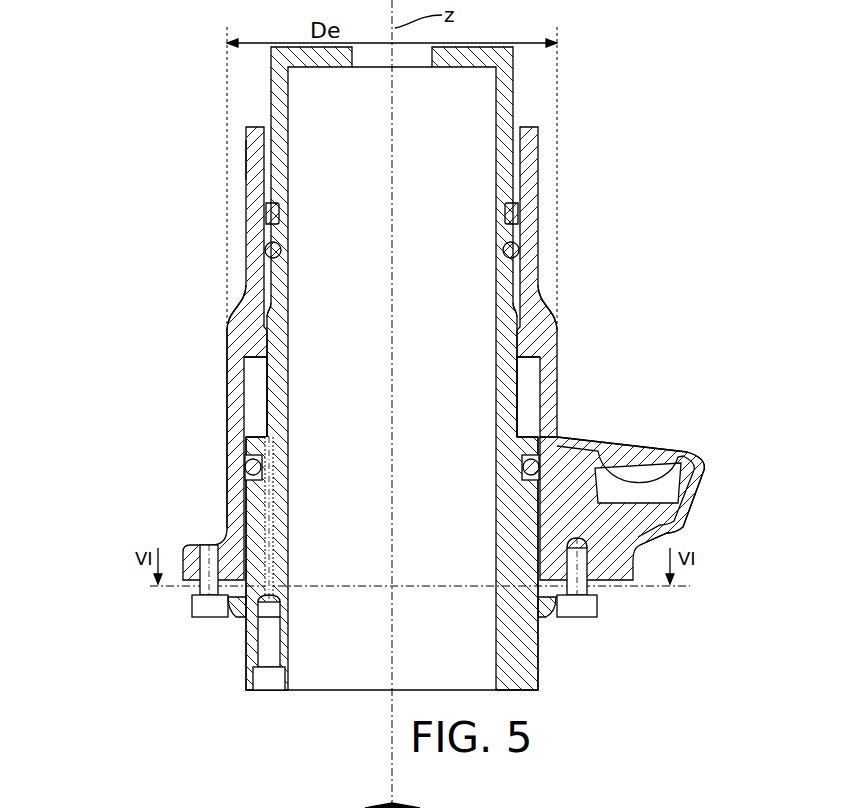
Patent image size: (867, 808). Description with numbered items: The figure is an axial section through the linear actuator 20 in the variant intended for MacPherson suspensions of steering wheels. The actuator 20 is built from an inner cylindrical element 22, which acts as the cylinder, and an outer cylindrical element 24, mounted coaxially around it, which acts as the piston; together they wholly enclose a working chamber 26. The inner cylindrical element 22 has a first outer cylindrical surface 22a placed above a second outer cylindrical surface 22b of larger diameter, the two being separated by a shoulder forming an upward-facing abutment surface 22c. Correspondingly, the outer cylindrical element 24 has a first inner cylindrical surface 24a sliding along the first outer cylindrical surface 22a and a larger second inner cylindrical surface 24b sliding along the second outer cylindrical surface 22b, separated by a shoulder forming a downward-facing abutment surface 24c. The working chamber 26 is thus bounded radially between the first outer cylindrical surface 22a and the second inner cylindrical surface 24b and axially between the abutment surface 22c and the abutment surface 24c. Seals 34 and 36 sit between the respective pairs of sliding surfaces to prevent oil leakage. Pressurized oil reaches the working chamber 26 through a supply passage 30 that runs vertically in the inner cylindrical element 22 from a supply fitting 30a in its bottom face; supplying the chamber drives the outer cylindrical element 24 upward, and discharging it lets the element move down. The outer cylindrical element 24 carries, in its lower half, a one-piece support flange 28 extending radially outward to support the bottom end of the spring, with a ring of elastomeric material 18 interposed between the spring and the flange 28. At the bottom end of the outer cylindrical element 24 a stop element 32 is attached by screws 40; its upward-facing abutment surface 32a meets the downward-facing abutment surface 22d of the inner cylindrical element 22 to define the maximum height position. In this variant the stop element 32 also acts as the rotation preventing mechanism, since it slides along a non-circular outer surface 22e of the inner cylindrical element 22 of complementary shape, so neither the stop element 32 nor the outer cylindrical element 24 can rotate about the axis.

The ring of elastomeric material 18 is at (646, 472).
The actuator 20 is at (247, 162).
The inner cylindrical element 22 is at (513, 110).
The first outer cylindrical surface 22a is at (537, 300).
The second outer cylindrical surface 22b is at (558, 440).
The abutment surface 22c is at (523, 437).
The abutment surface 22d is at (246, 513).
The outer surface 22e is at (246, 625).
The outer cylindrical element 24 is at (540, 245).
The first inner cylindrical surface 24a is at (268, 297).
The second inner cylindrical surface 24b is at (247, 485).
The abutment surface 24c is at (245, 368).
The working chamber 26 is at (255, 392).
The support flange 28 is at (703, 493).
The supply passage 30 is at (268, 592).
The supply fitting 30a is at (260, 690).
The stop element 32 is at (600, 590).
The abutment surface 32a is at (655, 487).
The seal 34 is at (268, 222).
The seal 36 is at (245, 468).
The screws 40 is at (582, 618).